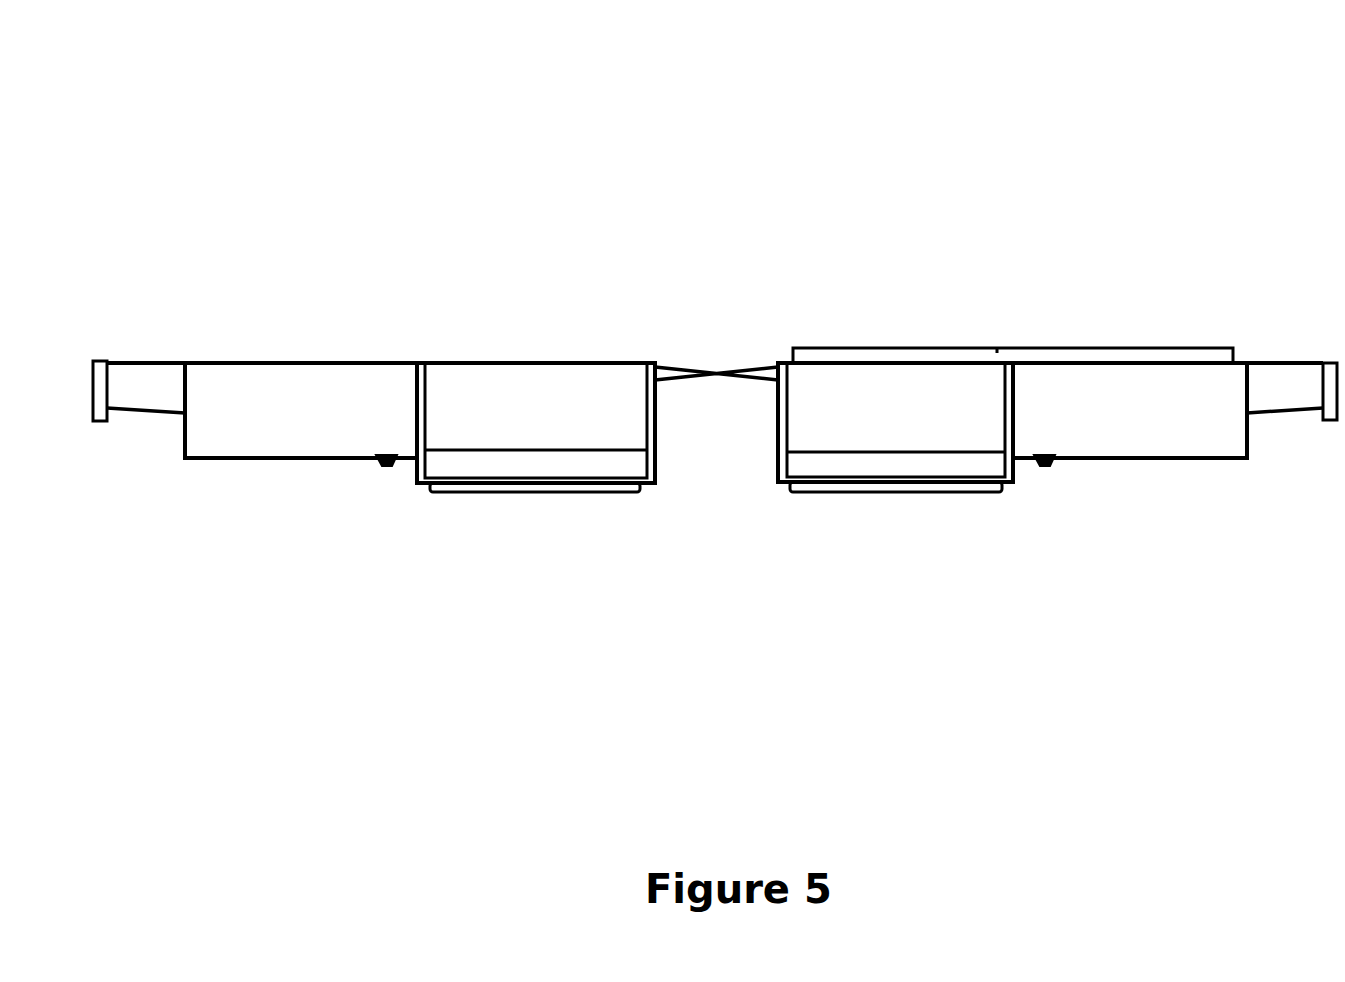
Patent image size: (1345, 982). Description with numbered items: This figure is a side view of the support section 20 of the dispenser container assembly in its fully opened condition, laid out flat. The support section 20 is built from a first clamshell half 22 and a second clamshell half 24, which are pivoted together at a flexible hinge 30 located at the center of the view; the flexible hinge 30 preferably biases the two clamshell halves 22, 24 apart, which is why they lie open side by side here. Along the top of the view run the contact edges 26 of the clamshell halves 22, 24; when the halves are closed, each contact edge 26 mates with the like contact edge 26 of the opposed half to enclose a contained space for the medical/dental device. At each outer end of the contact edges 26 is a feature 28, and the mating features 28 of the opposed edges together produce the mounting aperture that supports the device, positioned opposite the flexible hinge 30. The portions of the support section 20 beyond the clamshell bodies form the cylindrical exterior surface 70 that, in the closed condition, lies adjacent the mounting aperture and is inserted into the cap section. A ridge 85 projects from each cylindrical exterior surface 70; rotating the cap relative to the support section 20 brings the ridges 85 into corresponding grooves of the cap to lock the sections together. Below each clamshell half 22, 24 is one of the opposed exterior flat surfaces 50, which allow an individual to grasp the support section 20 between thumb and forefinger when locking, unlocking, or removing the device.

The support section 20 is at (770, 188).
The first clamshell half 22 is at (450, 398).
The second clamshell half 24 is at (920, 422).
The contact edge 26 is at (298, 362).
The feature 28 is at (98, 362).
The flexible hinge 30 is at (742, 365).
The exterior flat surface 50 is at (546, 470).
The cylindrical exterior surface 70 is at (238, 438).
The ridge 85 is at (382, 473).